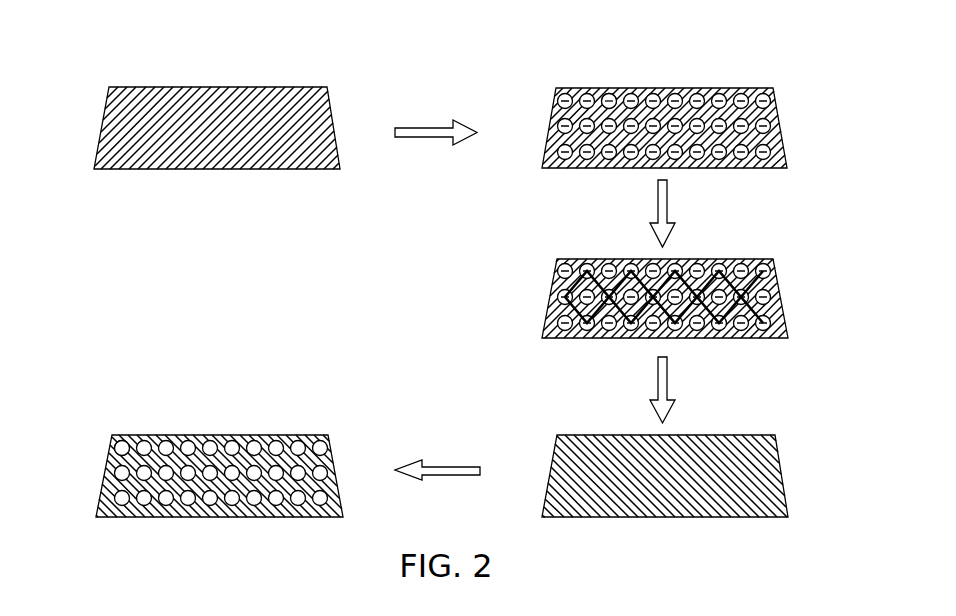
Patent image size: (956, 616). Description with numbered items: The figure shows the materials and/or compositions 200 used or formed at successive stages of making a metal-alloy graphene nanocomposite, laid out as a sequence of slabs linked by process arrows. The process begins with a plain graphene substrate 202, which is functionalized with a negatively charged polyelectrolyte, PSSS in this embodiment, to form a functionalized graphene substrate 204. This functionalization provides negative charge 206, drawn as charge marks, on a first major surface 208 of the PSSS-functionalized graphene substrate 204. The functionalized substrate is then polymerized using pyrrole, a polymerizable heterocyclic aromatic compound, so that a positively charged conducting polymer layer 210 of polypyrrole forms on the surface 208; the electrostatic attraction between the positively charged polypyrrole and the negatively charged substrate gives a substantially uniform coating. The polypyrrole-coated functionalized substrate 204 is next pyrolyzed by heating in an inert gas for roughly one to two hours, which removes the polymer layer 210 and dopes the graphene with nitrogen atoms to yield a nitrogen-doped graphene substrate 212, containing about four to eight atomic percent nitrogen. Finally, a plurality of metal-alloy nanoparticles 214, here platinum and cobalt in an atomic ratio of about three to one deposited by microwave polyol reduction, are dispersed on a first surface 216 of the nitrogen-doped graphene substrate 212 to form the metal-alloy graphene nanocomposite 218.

The materials and/or compositions 200 is at (832, 56).
The graphene substrate 202 is at (107, 118).
The functionalized graphene substrate 204 is at (778, 113).
The negative charge 206 is at (611, 97).
The first major surface 208 is at (708, 103).
The conducting polymer layer 210 is at (781, 307).
The nitrogen-doped graphene substrate 212 is at (778, 460).
The metal-alloy nanoparticles 214 is at (197, 455).
The first surface 216 is at (133, 460).
The metal-alloy graphene nanocomposite 218 is at (248, 439).